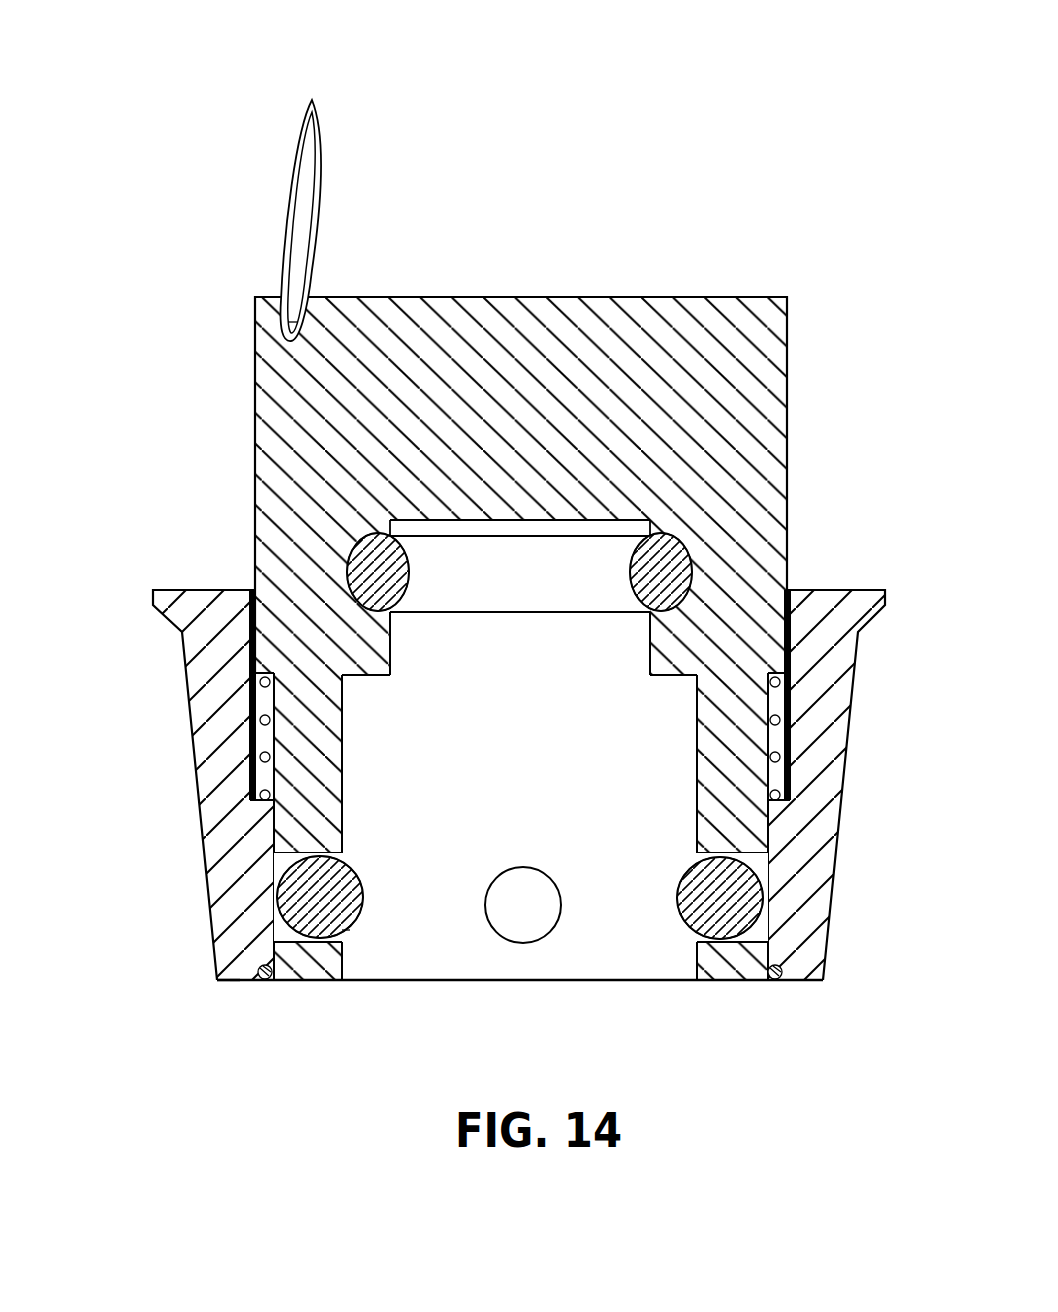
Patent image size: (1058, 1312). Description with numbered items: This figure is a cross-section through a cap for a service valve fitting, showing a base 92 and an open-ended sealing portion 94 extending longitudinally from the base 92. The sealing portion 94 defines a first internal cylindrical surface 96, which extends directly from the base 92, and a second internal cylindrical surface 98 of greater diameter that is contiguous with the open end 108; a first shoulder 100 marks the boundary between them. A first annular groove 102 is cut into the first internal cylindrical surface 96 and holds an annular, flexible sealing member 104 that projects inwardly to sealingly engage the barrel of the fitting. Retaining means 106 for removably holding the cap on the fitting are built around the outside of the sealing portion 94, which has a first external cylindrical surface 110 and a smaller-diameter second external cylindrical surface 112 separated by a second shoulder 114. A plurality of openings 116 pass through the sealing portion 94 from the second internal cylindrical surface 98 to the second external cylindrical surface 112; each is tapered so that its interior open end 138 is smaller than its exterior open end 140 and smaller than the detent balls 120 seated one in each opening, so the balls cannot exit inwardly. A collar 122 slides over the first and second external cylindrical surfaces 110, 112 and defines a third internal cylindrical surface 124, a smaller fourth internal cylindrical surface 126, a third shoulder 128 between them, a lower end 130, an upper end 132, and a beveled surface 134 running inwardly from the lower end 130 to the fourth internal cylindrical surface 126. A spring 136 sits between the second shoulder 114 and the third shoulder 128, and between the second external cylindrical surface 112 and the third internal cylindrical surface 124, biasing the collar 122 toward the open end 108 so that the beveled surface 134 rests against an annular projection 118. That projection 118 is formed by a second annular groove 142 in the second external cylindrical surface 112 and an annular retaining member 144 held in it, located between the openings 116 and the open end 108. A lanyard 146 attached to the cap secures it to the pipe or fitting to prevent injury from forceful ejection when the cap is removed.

The base 92 is at (641, 305).
The sealing portion 94 is at (327, 775).
The first internal cylindrical surface 96 is at (390, 637).
The second internal cylindrical surface 98 is at (345, 720).
The first shoulder 100 is at (343, 677).
The first annular groove 102 is at (690, 548).
The sealing member 104 is at (632, 597).
The retaining means 106 is at (673, 981).
The open end 108 is at (358, 983).
The first external cylindrical surface 110 is at (788, 324).
The second external cylindrical surface 112 is at (272, 858).
The second shoulder 114 is at (266, 668).
The openings 116 is at (355, 850).
The annular projection 118 is at (250, 983).
The detent balls 120 is at (355, 885).
The collar 122 is at (215, 690).
The third internal cylindrical surface 124 is at (258, 680).
The fourth internal cylindrical surface 126 is at (272, 840).
The third shoulder 128 is at (272, 808).
The lower end 130 is at (230, 983).
The upper end 132 is at (185, 592).
The beveled surface 134 is at (795, 955).
The spring 136 is at (250, 745).
The interior open end 138 is at (352, 945).
The exterior open end 140 is at (240, 957).
The second annular groove 142 is at (273, 982).
The annular retaining member 144 is at (245, 976).
The lanyard 146 is at (310, 100).